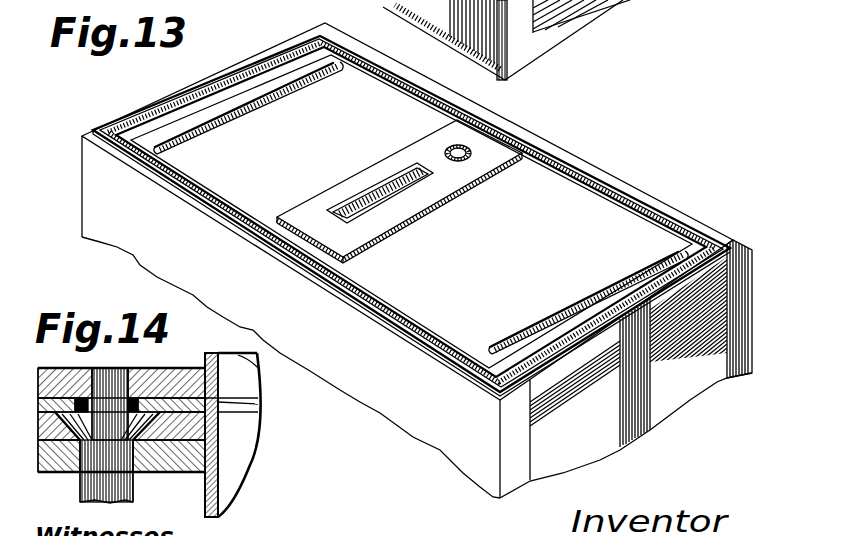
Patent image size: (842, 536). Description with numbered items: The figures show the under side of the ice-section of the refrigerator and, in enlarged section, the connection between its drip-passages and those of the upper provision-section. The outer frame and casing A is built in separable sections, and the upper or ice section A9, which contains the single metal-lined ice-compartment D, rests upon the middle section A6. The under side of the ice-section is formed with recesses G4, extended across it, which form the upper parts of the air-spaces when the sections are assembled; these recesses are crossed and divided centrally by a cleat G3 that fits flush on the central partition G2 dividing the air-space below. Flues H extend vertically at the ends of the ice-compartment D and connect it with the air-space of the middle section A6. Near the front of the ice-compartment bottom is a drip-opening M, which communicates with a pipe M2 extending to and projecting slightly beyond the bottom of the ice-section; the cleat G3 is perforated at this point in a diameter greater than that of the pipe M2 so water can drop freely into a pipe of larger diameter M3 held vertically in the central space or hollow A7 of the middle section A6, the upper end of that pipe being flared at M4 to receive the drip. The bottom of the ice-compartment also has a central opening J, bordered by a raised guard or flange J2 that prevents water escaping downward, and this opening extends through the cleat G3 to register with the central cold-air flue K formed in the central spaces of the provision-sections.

In FIG. 13, the outer frame and casing A is at (417, 260).
In FIG. 13, the upper or ice division or section A9 is at (597, 167).
In FIG. 14, the upper or ice division or section A9 is at (114, 373).
In FIG. 13, the recesses G4 is at (411, 211).
In FIG. 13, the flues H is at (230, 123).
In FIG. 13, the cleats G3 is at (417, 200).
In FIG. 14, the cleats G3 is at (258, 411).
In FIG. 13, the central opening J is at (368, 192).
In FIG. 14, the central opening J is at (242, 374).
In FIG. 13, the pipe M2 is at (478, 160).
In FIG. 14, the drip-opening M is at (118, 368).
In FIG. 14, the pipe of larger diameter M3 is at (110, 502).
In FIG. 14, the flared upper end M4 is at (62, 466).
In FIG. 14, the ice-compartment D is at (165, 368).
In FIG. 14, the central partition G2 is at (170, 463).
In FIG. 14, the space or hollow A7 is at (204, 505).
In FIG. 14, the middle section A6 is at (243, 503).
In FIG. 14, the central cold-air flue K is at (228, 435).
In FIG. 14, the raised guard or flange J2 is at (243, 356).